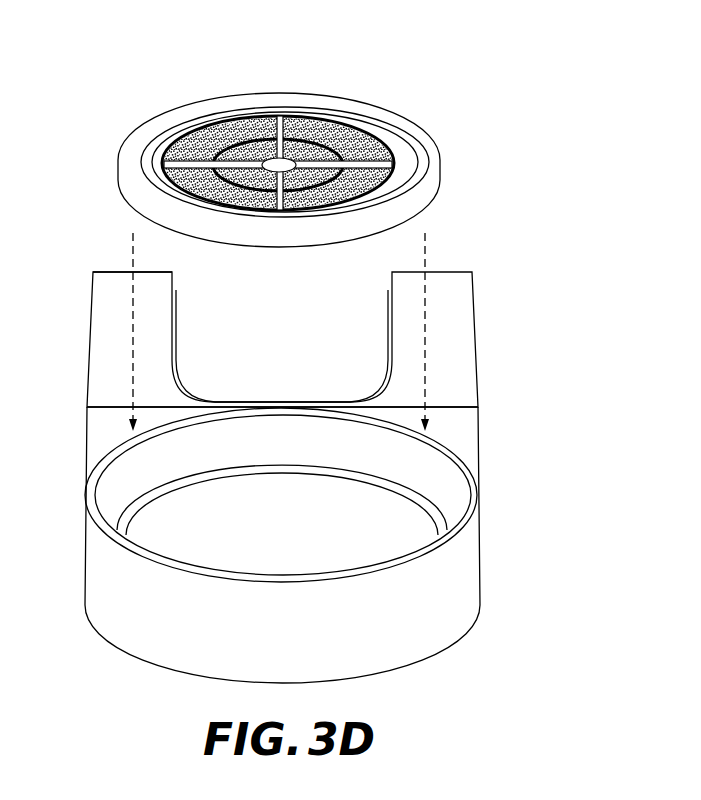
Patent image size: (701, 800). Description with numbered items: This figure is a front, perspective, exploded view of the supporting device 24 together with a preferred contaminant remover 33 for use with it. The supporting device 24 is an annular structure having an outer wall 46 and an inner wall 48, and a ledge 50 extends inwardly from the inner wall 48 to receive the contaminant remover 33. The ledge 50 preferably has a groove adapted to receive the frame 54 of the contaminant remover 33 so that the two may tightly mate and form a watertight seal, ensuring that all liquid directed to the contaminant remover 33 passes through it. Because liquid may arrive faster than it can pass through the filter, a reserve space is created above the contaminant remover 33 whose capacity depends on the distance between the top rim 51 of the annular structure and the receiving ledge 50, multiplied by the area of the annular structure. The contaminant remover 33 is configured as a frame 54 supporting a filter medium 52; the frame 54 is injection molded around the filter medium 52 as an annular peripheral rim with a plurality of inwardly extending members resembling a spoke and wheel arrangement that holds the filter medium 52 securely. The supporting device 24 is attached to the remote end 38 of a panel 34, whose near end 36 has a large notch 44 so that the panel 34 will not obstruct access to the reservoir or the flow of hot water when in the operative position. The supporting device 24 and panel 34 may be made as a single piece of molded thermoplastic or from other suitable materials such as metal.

The supporting device 24 is at (322, 451).
The contaminant remover 33 is at (319, 144).
The panel 34 is at (112, 370).
The near end 36 is at (105, 272).
The remote end 38 is at (100, 407).
The notch 44 is at (317, 402).
The outer wall 46 is at (452, 602).
The inner wall 48 is at (283, 443).
The ledge 50 is at (173, 493).
The top rim 51 is at (480, 493).
The filter medium 52 is at (318, 122).
The frame 54 is at (435, 172).